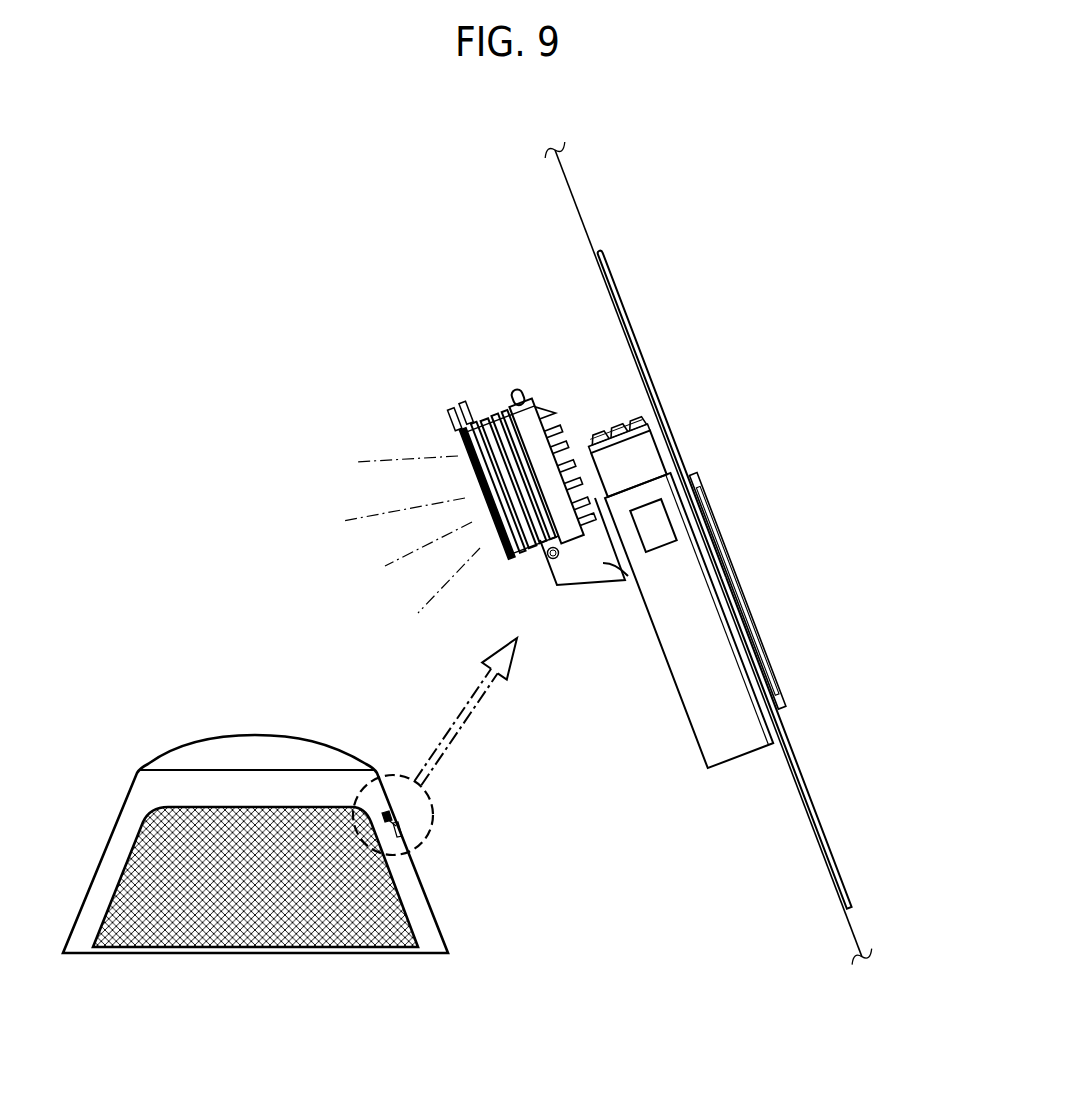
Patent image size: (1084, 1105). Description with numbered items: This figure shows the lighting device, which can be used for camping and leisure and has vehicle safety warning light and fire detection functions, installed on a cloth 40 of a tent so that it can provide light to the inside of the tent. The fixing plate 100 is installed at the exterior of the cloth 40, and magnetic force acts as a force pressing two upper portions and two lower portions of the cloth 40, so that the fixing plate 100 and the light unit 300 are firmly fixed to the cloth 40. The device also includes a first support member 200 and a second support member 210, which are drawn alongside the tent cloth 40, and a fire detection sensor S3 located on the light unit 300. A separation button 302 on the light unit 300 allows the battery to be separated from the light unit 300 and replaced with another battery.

The cloth of a tent 40 is at (708, 553).
The first support member 200 is at (661, 414).
The second support member 210 is at (786, 743).
The fixing plate 100 is at (738, 591).
The light unit 300 is at (689, 620).
The separation button 302 is at (653, 525).
The fire detection sensor S3 is at (625, 456).